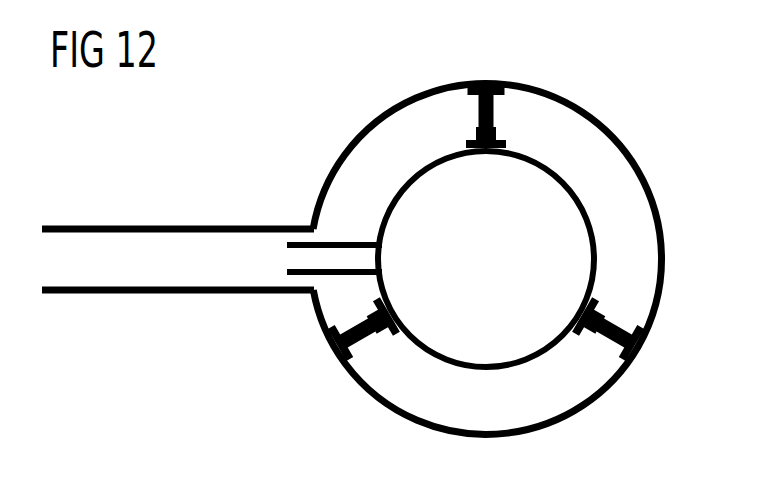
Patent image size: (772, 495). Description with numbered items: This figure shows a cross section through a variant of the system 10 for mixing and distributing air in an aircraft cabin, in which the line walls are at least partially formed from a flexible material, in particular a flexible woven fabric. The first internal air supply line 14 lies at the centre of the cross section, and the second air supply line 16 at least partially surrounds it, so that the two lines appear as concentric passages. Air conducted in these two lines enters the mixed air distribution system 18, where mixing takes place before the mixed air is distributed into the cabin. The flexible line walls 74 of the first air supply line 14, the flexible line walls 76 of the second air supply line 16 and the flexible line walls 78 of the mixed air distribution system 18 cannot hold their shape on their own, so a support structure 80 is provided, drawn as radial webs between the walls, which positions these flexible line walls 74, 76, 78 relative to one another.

The system 10 is at (252, 158).
The first internal air supply line 14 is at (562, 253).
The second air supply line 16 is at (501, 421).
The mixed air distribution system 18 is at (110, 294).
The flexible line walls of the first air supply line 74 is at (560, 171).
The flexible line walls of the second air supply line 76 is at (651, 175).
The flexible line walls of the mixed air distribution system 78 is at (178, 295).
The support structure 80 is at (496, 112).